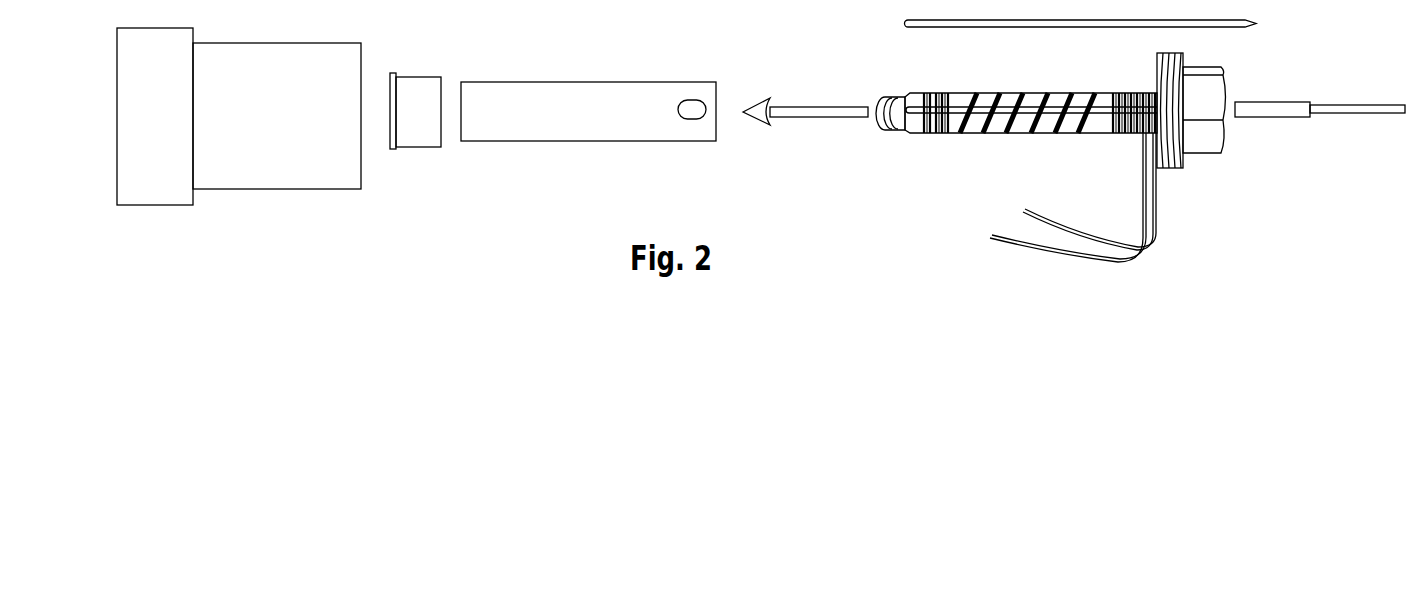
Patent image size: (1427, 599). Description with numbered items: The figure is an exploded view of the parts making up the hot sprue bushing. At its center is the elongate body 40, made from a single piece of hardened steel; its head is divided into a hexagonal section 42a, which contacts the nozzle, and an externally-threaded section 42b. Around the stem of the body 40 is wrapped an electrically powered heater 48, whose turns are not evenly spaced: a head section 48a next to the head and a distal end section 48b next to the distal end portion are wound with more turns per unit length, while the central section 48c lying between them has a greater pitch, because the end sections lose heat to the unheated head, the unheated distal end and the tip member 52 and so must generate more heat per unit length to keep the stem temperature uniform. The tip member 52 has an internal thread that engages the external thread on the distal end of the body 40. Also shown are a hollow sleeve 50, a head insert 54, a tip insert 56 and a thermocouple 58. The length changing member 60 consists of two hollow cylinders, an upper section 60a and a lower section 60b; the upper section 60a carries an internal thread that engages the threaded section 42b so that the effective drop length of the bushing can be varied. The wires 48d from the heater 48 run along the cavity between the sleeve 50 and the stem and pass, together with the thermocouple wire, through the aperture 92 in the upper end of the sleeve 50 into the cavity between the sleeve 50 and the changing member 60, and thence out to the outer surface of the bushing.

The elongate body 40 is at (1081, 164).
The hexagonal section 42a is at (1213, 140).
The externally-threaded section 42b is at (1172, 153).
The electrically powered heater 48 is at (1072, 164).
The head section 48a is at (1125, 87).
The distal end section 48b is at (943, 95).
The central section 48c is at (1042, 87).
The wires 48d is at (1162, 250).
The hollow sleeve 50 is at (611, 135).
The tip member 52 is at (415, 123).
The head insert 54 is at (1310, 117).
The tip insert 56 is at (777, 118).
The thermocouple 58 is at (1253, 27).
The length changing member 60 is at (268, 141).
The upper section 60a is at (343, 167).
The lower section 60b is at (163, 186).
The aperture 92 is at (695, 110).